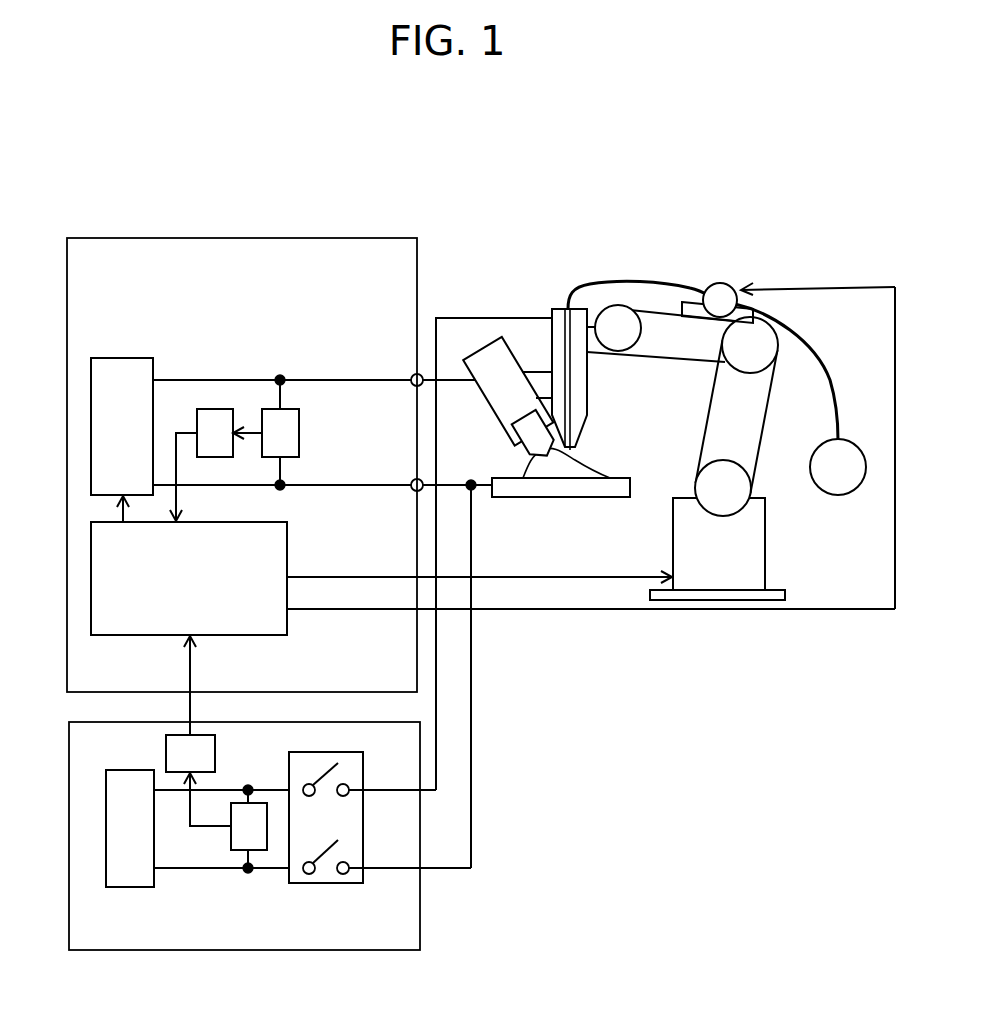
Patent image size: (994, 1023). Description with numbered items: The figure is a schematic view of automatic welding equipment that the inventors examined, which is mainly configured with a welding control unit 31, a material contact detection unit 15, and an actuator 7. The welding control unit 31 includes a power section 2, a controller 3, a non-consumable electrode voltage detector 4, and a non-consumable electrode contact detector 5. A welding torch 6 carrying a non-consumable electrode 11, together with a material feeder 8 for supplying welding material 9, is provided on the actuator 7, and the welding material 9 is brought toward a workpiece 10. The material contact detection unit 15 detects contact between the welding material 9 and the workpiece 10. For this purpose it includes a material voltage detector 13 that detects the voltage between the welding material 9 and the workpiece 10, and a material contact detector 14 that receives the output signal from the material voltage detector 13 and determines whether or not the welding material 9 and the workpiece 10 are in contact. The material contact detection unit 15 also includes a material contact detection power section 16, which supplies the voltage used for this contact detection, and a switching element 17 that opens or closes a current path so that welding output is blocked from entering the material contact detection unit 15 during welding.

The welding control unit 31 is at (91, 237).
The power section 2 is at (127, 357).
The controller 3 is at (133, 641).
The non-consumable electrode voltage detector 4 is at (300, 435).
The non-consumable electrode contact detector 5 is at (205, 407).
The welding torch 6 is at (508, 352).
The actuator 7 is at (774, 519).
The material feeder 8 is at (722, 296).
The welding material 9 is at (840, 434).
The workpiece 10 is at (563, 498).
The non-consumable electrode 11 is at (538, 448).
The material voltage detector 13 is at (242, 851).
The material contact detector 14 is at (217, 750).
The material contact detection unit 15 is at (100, 951).
The material contact detection power section 16 is at (128, 888).
The switching element 17 is at (342, 847).